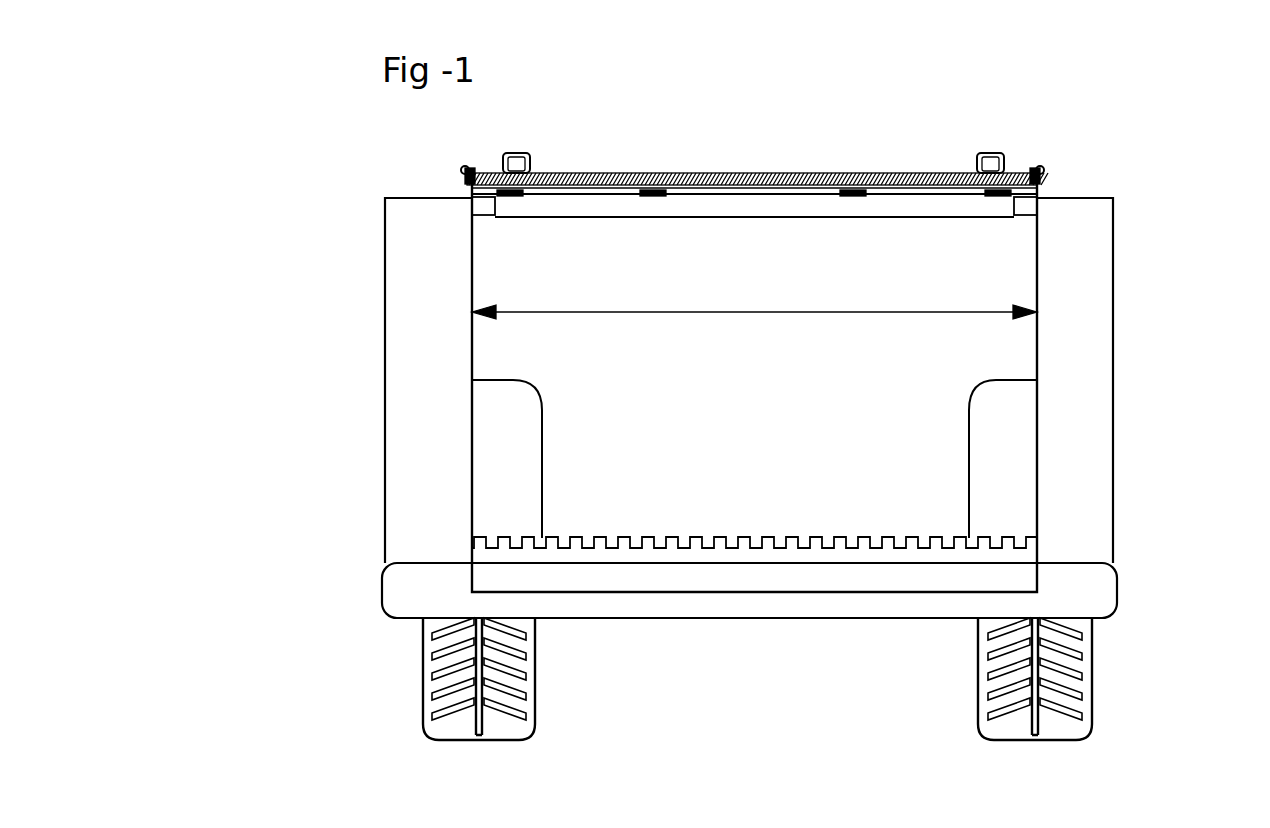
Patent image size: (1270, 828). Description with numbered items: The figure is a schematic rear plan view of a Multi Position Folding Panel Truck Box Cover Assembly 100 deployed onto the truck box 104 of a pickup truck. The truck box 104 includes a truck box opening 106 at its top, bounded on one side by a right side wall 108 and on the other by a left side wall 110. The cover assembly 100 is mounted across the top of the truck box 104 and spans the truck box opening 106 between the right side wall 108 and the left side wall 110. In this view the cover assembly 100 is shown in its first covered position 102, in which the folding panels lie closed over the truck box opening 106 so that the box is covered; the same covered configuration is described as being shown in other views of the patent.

The Multi Position Folding Panel Truck Box Cover Assembly 100 is at (920, 87).
The first covered position 102 is at (340, 147).
The truck box 104 is at (1082, 528).
The truck box opening 106 is at (772, 314).
The right side wall 108 is at (1085, 281).
The left side wall 110 is at (422, 322).